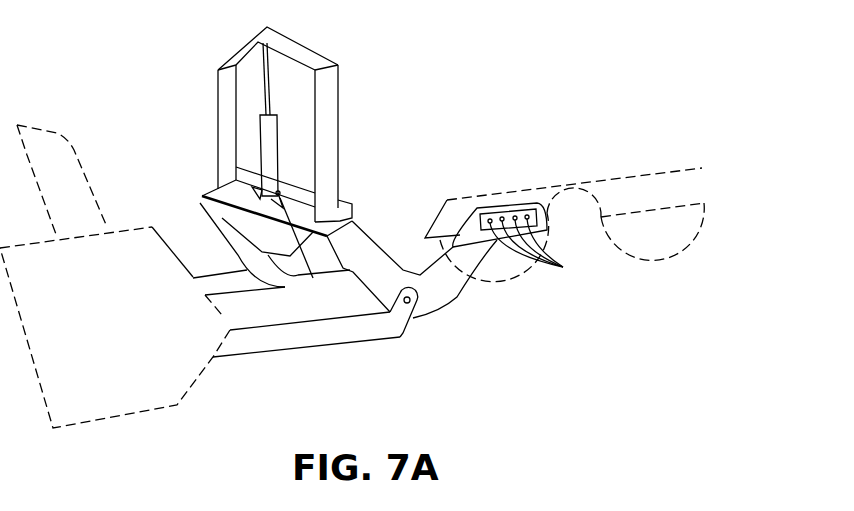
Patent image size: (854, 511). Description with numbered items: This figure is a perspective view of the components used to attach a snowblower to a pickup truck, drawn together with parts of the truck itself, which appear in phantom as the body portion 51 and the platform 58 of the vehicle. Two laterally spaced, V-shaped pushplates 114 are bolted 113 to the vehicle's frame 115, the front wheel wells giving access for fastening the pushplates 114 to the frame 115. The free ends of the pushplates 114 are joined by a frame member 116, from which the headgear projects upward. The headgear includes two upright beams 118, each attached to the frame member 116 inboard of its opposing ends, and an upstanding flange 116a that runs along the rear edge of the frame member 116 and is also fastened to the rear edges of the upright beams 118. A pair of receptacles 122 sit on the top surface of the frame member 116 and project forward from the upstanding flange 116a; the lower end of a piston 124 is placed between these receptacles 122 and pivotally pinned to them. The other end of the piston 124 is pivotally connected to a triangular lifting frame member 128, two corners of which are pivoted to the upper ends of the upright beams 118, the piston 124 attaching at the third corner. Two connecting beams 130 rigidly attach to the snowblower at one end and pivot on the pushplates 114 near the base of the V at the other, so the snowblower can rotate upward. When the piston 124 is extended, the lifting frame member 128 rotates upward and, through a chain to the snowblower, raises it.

The robot body portion 51 is at (67, 160).
The base platform 58 is at (127, 387).
The bolts 113 is at (563, 268).
The pushplates 114 is at (233, 225).
The vehicle frame 115 is at (662, 190).
The frame member 116 is at (363, 225).
The upstanding flange 116a is at (343, 200).
The upright beams 118 is at (227, 113).
The receptacles 122 is at (314, 253).
The piston 124 is at (272, 133).
The lifting frame member 128 is at (293, 45).
The connecting beams 130 is at (238, 282).